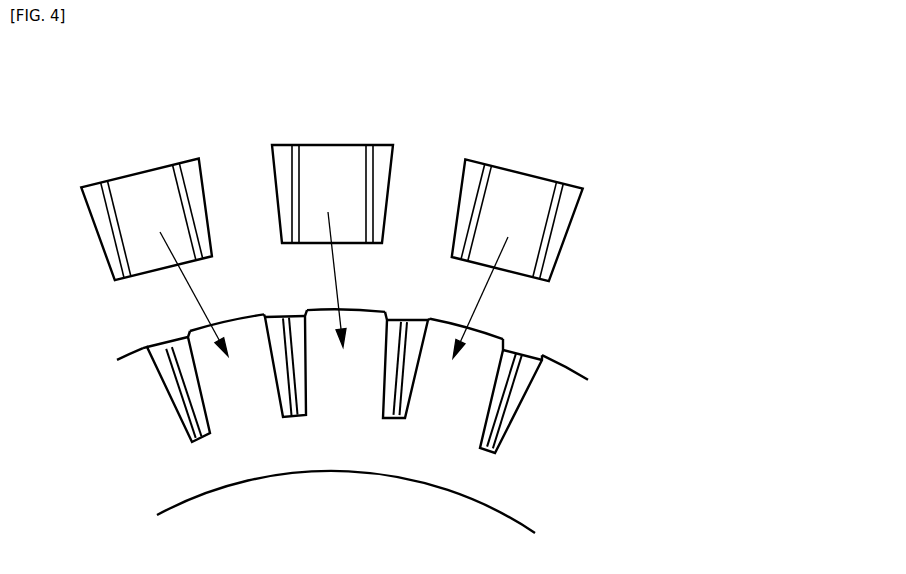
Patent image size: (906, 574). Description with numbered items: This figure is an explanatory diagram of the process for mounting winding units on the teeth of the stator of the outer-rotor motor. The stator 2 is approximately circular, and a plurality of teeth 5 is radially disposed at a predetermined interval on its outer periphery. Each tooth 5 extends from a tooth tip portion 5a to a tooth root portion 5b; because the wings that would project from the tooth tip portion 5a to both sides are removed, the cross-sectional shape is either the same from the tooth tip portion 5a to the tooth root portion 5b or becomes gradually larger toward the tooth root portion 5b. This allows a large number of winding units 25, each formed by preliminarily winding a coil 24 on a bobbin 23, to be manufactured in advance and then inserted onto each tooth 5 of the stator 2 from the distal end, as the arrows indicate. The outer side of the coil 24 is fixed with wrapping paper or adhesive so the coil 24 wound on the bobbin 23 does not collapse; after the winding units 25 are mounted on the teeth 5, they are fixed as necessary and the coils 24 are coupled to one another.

The stator 2 is at (343, 442).
The tooth 5 is at (199, 350).
The tooth tip portion 5a is at (237, 335).
The tooth root portion 5b is at (250, 433).
The bobbin 23 is at (180, 199).
The coil 24 is at (190, 177).
The winding unit 25 is at (107, 159).